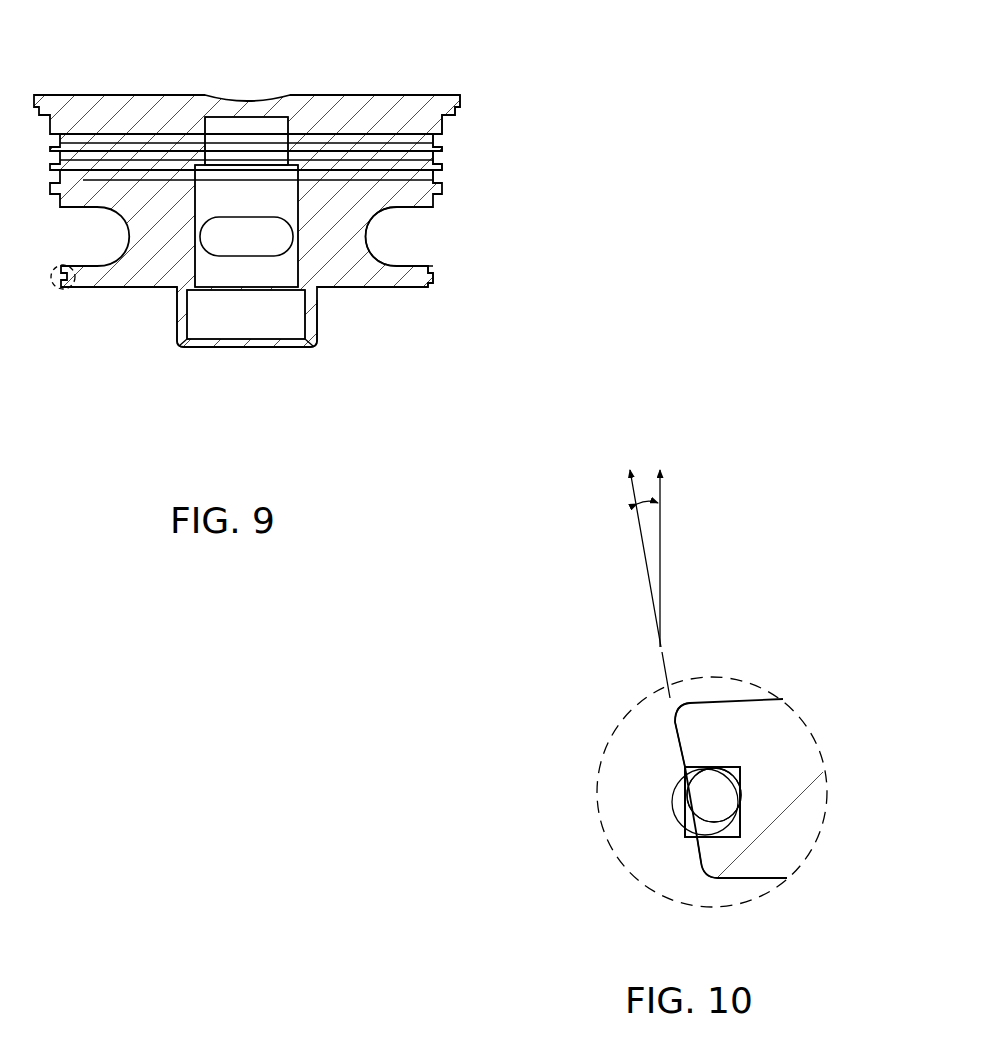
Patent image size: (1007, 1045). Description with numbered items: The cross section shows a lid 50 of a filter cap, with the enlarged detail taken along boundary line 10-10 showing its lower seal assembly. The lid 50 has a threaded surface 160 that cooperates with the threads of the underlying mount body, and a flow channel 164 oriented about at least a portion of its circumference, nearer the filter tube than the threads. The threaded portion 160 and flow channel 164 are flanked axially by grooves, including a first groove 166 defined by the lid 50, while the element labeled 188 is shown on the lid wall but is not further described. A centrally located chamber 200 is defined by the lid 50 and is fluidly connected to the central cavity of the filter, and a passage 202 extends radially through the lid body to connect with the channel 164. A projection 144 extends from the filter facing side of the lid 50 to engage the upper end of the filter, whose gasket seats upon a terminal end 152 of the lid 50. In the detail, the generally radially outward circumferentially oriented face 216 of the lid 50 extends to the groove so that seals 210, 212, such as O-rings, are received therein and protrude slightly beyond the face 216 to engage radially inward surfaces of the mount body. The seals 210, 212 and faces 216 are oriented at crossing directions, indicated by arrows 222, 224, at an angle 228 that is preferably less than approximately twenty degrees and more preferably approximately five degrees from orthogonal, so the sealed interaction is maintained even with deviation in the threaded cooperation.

In FIG. 9, the lid 50 is at (360, 103).
In FIG. 10, the lid 50 is at (752, 718).
In FIG. 9, the first groove 166 is at (492, 100).
In FIG. 10, the first groove 166 is at (740, 780).
In FIG. 9, the threaded surface 160 is at (515, 136).
In FIG. 9, the flow channel 164 is at (395, 237).
In FIG. 9, the lower land 188 is at (515, 275).
In FIG. 10, the lower land 188 is at (712, 802).
In FIG. 9, the piston fragment detail 10 is at (52, 279).
In FIG. 9, the passage 202 is at (215, 242).
In FIG. 9, the chamber 200 is at (207, 332).
In FIG. 9, the projection 144 is at (180, 313).
In FIG. 9, the terminal end 152 is at (310, 347).
In FIG. 10, the radially outward oriented face 216 is at (675, 740).
In FIG. 10, the seal 210 is at (673, 803).
In FIG. 10, the seal 212 is at (714, 795).
In FIG. 10, the arrow 222 is at (662, 527).
In FIG. 10, the arrow 224 is at (638, 527).
In FIG. 10, the angle 228 is at (648, 495).